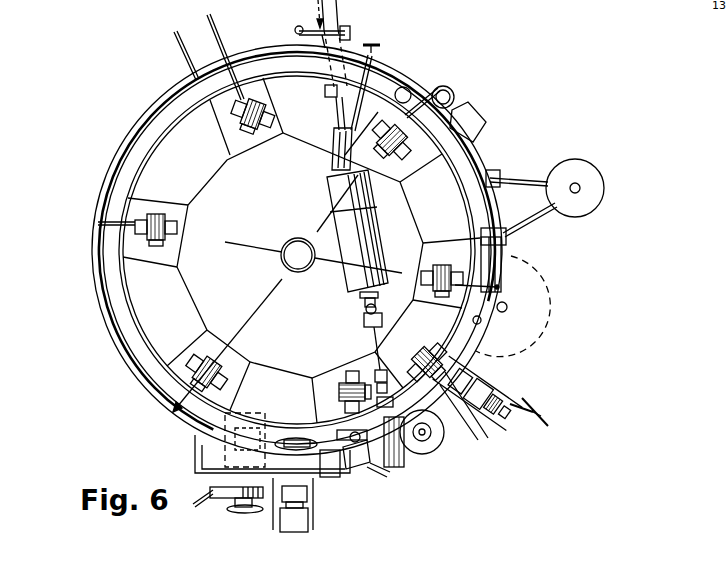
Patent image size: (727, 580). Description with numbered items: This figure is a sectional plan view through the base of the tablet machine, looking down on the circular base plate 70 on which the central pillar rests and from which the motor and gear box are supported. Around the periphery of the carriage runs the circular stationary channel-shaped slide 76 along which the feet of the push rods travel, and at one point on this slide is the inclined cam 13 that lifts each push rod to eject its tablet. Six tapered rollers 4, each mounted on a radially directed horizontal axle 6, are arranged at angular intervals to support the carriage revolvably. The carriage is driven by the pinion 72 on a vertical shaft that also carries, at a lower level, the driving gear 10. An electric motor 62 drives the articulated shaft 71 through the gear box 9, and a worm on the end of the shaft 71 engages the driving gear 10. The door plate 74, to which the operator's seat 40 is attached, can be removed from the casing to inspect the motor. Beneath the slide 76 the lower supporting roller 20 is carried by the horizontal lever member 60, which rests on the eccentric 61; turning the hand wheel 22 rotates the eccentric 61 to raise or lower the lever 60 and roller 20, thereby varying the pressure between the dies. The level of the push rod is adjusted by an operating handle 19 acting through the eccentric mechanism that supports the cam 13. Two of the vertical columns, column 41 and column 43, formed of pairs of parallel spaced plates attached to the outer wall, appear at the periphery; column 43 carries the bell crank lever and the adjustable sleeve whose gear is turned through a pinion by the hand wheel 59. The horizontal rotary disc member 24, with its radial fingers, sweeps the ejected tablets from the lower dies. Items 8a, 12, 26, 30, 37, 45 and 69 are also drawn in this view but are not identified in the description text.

The tapered rollers 4 is at (157, 217).
The radially directed horizontal axles 6 is at (177, 233).
The adjusting rod 8a is at (323, 120).
The gear box 9 is at (357, 257).
The driving gear 10 is at (422, 446).
The adjusting screw 12 is at (337, 438).
The inclined cam 13 is at (488, 275).
The operating handle 19 is at (348, 468).
The lower supporting roller 20 is at (305, 448).
The hand wheel 22 is at (237, 513).
The horizontal rotary disc member 24 is at (528, 325).
The clamp block 26 is at (465, 118).
The pin 30 is at (403, 86).
The handle 37 is at (375, 40).
The operator's seat 40 is at (580, 210).
The vertical column 41 is at (315, 520).
The vertical column 43 is at (478, 428).
The gear 45 is at (430, 345).
The hand wheel 59 is at (542, 412).
The horizontal lever member 60 is at (242, 427).
The eccentric 61 is at (240, 443).
The electric motor 62 is at (343, 190).
The bevel gear 69 is at (177, 357).
The circular horizontal plate 70 is at (243, 284).
The articulated shaft 71 is at (377, 342).
The pinion 72 is at (430, 430).
The door plate 74 is at (486, 152).
The slide 76 is at (118, 303).